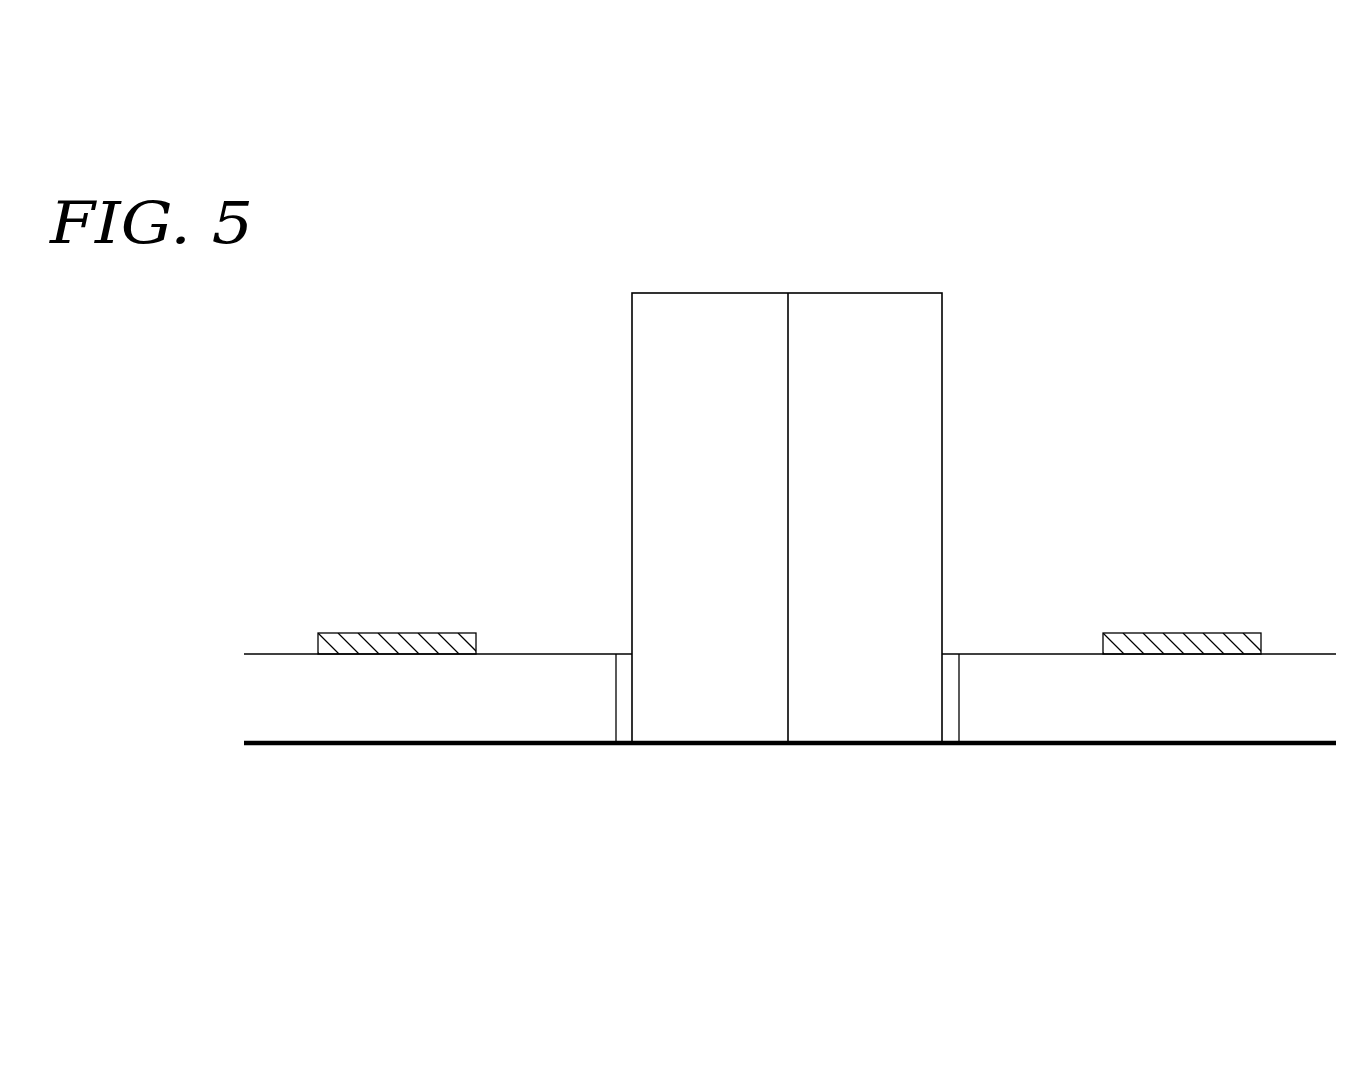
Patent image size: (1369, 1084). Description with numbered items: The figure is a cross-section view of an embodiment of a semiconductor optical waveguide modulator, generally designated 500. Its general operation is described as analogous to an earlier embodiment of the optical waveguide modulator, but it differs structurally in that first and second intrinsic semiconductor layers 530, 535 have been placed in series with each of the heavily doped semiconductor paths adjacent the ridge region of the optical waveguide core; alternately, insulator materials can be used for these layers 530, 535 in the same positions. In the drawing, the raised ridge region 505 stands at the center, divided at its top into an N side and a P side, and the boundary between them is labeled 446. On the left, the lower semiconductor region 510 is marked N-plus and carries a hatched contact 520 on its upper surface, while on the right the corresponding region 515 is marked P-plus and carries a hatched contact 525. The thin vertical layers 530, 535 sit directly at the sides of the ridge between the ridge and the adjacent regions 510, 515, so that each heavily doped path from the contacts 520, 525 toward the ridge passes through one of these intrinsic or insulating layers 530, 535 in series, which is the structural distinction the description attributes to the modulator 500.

The semiconductor optical waveguide modulator 500 is at (1244, 221).
The vertical semiconductor pillar 505 is at (943, 344).
The p-n junction 446 is at (829, 292).
The N-type region 510 is at (542, 653).
The P-type region 515 is at (1032, 653).
The N+ contact 520 is at (388, 632).
The P+ contact 525 is at (1213, 632).
The first intrinsic semiconductor layer 530 is at (622, 747).
The second intrinsic semiconductor layer 535 is at (952, 747).